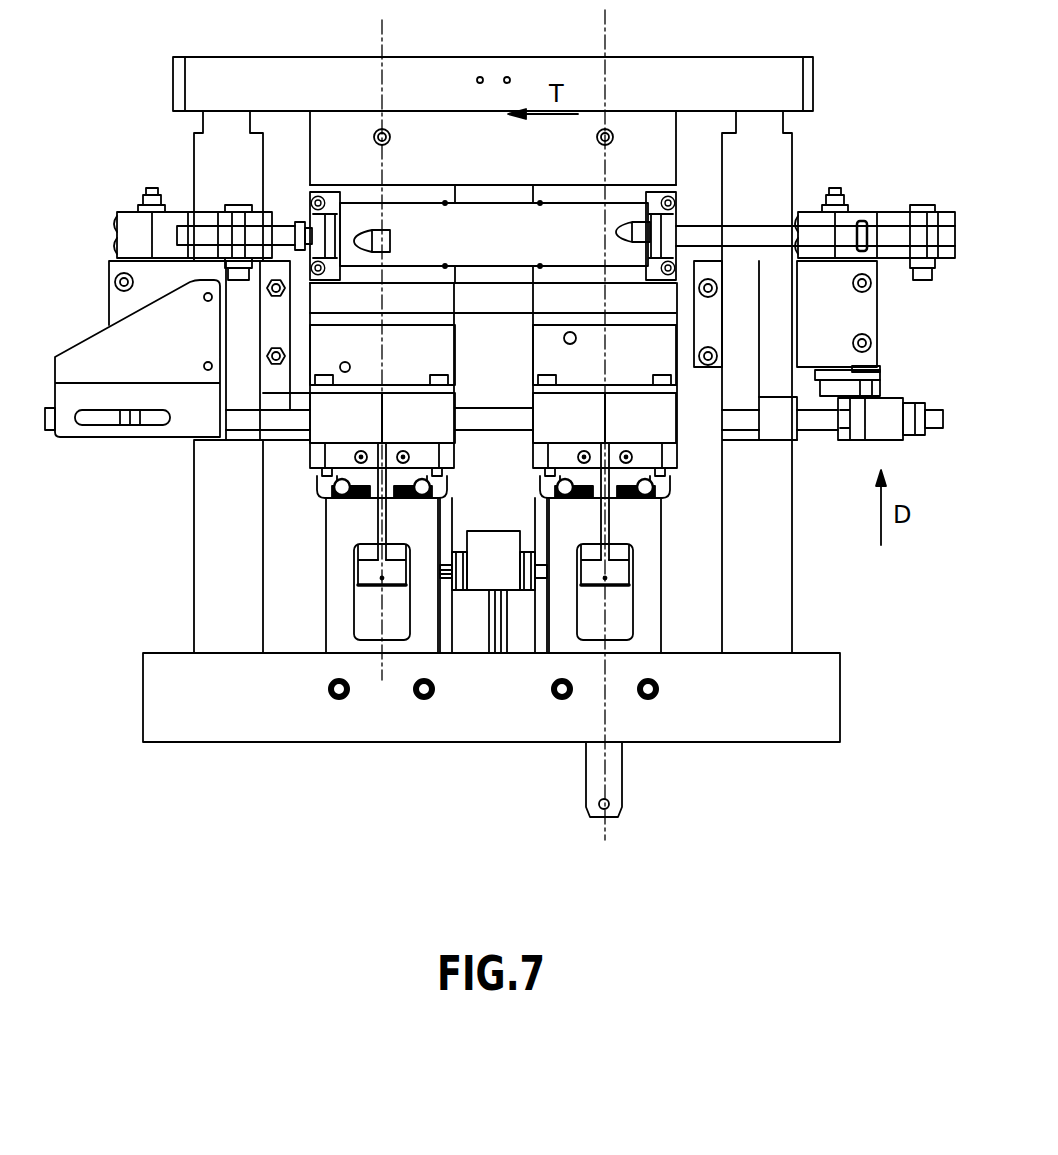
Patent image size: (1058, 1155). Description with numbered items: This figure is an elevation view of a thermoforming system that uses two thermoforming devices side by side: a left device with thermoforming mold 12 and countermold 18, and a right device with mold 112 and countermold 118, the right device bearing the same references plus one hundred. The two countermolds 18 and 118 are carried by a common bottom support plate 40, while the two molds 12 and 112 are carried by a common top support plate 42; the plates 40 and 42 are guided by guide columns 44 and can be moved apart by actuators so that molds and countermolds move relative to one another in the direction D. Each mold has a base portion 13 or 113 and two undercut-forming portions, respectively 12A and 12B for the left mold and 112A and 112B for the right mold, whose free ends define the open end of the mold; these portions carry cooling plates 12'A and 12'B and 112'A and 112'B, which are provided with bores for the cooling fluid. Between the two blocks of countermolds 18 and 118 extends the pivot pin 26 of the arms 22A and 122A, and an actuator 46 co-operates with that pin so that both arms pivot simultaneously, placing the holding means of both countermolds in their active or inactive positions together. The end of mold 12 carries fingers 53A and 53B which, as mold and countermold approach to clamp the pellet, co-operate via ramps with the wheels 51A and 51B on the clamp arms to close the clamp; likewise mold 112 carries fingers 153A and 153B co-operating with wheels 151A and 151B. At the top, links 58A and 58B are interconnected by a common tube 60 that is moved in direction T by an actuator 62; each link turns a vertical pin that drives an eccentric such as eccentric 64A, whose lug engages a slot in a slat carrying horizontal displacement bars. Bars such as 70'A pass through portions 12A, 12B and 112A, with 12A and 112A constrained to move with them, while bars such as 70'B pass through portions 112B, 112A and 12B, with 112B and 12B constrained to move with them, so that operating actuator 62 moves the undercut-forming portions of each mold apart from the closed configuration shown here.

The top support plate 42 is at (222, 72).
The guide columns 44 is at (208, 152).
The actuator 62 is at (500, 216).
The common tube 60 is at (752, 235).
The link 58A is at (889, 215).
The link 58B is at (134, 229).
The eccentric 64A is at (866, 385).
The horizontal displacement bar 70'A is at (794, 438).
The horizontal displacement bar 70'B is at (259, 435).
The thermoforming mold 12 is at (403, 468).
The thermoforming mold 112 is at (586, 468).
The base portion 13 is at (358, 354).
The base portion 113 is at (657, 354).
The undercut-forming portion 12A is at (315, 398).
The undercut-forming portion 12B is at (530, 383).
The undercut-forming portion 112A is at (541, 418).
The undercut-forming portion 112B is at (676, 396).
The cooling plate 12'A is at (346, 419).
The cooling plate 12'B is at (418, 419).
The cooling plate 112'A is at (569, 419).
The cooling plate 112'B is at (640, 419).
The finger 53A is at (322, 485).
The wheel 51A is at (335, 505).
The finger 53B is at (447, 480).
The wheel 51B is at (432, 488).
The finger 153A is at (546, 486).
The wheel 151A is at (571, 490).
The finger 153B is at (668, 478).
The wheel 151B is at (655, 502).
The arm 22A is at (376, 532).
The arm 122A is at (627, 538).
The countermold 18 is at (338, 598).
The countermold 118 is at (645, 596).
The pivot pin 26 is at (444, 565).
The actuator 46 is at (510, 571).
The bottom support plate 40 is at (836, 702).